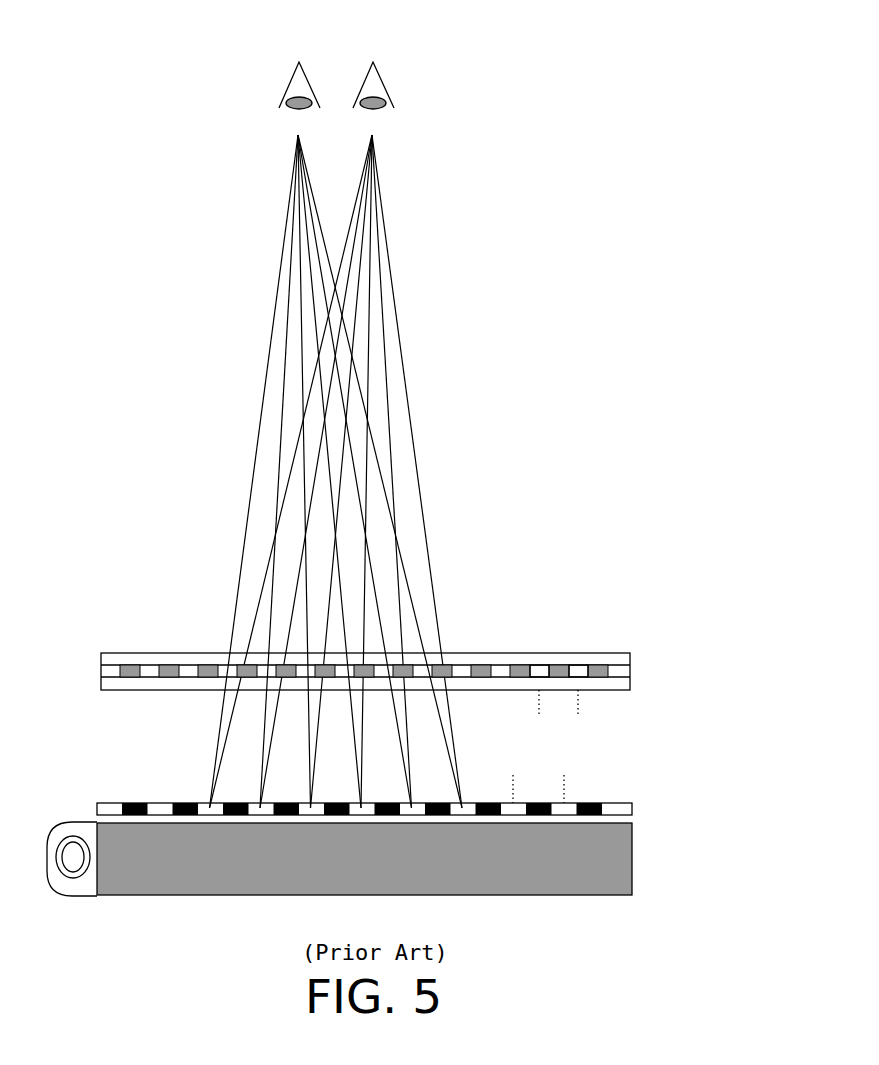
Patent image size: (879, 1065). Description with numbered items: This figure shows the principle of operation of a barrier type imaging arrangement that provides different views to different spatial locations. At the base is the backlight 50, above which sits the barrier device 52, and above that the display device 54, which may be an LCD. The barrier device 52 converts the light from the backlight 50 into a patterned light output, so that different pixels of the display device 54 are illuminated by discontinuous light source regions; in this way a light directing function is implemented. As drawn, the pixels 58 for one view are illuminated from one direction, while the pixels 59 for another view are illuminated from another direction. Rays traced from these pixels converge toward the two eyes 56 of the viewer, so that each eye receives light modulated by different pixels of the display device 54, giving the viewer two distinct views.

The backlight 50 is at (652, 862).
The barrier device 52 is at (652, 812).
The display device 54 is at (652, 673).
The two eyes of the viewer 56 is at (399, 83).
The pixels for one view 58 is at (168, 661).
The pixels for another view 59 is at (541, 661).